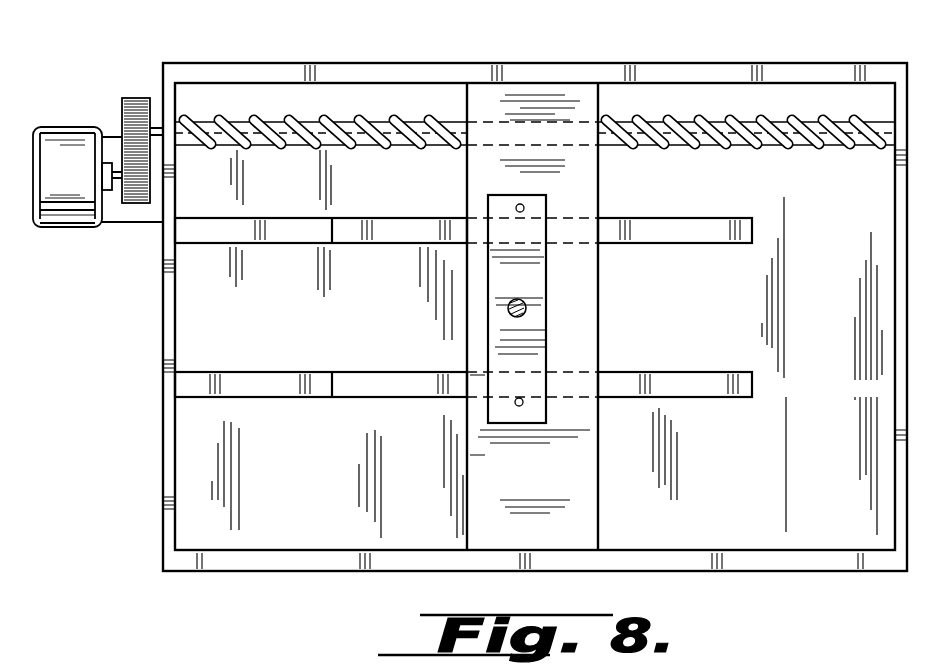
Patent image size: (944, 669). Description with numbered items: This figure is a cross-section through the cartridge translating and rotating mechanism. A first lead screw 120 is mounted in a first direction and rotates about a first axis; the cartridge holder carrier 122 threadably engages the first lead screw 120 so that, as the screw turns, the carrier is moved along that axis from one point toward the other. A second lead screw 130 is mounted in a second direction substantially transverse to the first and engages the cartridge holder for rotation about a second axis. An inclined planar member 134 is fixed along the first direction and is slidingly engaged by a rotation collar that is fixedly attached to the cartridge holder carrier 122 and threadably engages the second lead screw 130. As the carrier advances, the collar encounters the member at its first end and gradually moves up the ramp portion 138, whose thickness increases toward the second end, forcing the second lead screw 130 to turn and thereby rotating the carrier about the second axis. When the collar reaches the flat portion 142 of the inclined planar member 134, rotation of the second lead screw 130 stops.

The first lead screw 120 is at (713, 117).
The cartridge holder carrier 122 is at (600, 328).
The second lead screw 130 is at (517, 299).
The inclined planar member 134 is at (399, 232).
The ramp portion 138 is at (752, 388).
The flat portion 142 is at (254, 398).